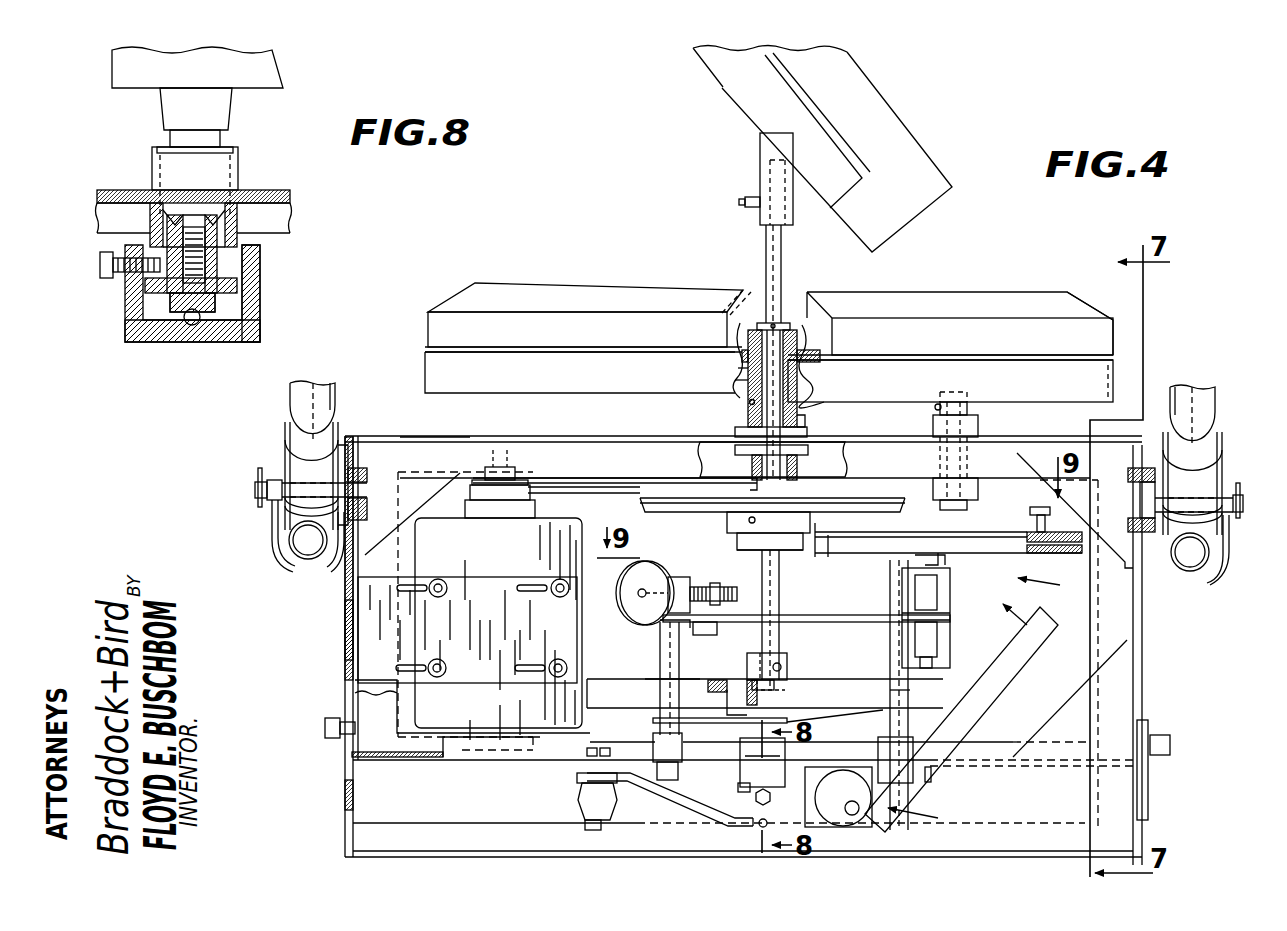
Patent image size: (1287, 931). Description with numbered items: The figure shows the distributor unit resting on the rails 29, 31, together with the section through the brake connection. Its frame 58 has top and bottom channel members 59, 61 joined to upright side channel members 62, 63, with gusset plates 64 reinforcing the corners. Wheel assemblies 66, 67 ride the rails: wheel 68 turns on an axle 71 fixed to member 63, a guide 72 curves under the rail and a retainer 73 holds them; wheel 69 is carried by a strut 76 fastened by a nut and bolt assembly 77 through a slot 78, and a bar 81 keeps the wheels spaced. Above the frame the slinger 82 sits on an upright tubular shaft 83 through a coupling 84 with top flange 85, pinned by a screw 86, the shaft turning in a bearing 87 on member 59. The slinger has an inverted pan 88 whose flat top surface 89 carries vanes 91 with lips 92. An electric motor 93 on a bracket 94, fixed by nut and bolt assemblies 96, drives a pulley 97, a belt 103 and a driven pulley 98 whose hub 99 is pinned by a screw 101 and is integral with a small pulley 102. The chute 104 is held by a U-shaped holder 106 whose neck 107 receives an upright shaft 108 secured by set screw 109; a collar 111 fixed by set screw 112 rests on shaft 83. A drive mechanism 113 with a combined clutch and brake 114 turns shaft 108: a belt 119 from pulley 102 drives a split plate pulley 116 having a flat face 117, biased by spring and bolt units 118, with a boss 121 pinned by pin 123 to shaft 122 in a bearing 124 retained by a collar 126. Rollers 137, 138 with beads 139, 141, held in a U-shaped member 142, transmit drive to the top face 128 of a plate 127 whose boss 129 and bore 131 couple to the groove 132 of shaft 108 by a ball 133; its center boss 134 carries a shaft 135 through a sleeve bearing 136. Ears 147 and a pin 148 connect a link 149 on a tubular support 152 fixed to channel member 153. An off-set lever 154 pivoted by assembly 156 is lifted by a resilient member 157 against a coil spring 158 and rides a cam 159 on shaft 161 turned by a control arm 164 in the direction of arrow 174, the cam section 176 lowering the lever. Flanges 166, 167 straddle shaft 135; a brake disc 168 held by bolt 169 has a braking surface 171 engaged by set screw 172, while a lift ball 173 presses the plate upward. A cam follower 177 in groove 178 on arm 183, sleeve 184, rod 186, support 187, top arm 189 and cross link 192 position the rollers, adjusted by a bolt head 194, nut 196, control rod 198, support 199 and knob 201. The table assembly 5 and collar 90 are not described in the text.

In FIG. 4, the table assembly 5 is at (641, 415).
In FIG. 4, the rail 29 is at (1200, 572).
In FIG. 4, the rail 31 is at (292, 552).
In FIG. 4, the frame 58 is at (413, 764).
In FIG. 4, the top channel member 59 is at (537, 450).
In FIG. 8, the bottom channel member 61 is at (290, 195).
In FIG. 4, the bottom channel member 61 is at (1000, 753).
In FIG. 4, the upright side channel member 62 is at (1145, 660).
In FIG. 4, the upright side channel member 63 is at (352, 700).
In FIG. 4, the gusset plates 64 is at (392, 447).
In FIG. 4, the wheel assembly 66 is at (1240, 460).
In FIG. 4, the wheel assembly 67 is at (263, 450).
In FIG. 4, the wheel 68 is at (300, 468).
In FIG. 4, the wheel 69 is at (333, 423).
In FIG. 4, the axle 71 is at (255, 490).
In FIG. 4, the guide 72 is at (270, 523).
In FIG. 4, the retainer 73 is at (258, 475).
In FIG. 4, the strut 76 is at (345, 626).
In FIG. 4, the nut and bolt assembly 77 is at (332, 718).
In FIG. 4, the longitudinal slot 78 is at (352, 756).
In FIG. 4, the bar 81 is at (332, 545).
In FIG. 4, the slinger 82 is at (594, 288).
In FIG. 4, the upright tubular shaft 83 is at (797, 465).
In FIG. 4, the coupling 84 is at (745, 385).
In FIG. 4, the top flange 85 is at (740, 372).
In FIG. 4, the drive pin or screw 86 is at (749, 404).
In FIG. 4, the bearing 87 is at (740, 453).
In FIG. 4, the inverted circular pan 88 is at (573, 380).
In FIG. 4, the flat top surface 89 is at (1005, 358).
In FIG. 4, the collar 90 is at (798, 420).
In FIG. 4, the upright vanes 91 is at (1100, 340).
In FIG. 4, the lip 92 is at (1035, 290).
In FIG. 4, the electric motor 93 is at (487, 553).
In FIG. 4, the bracket 94 is at (478, 658).
In FIG. 4, the nut and bolt assemblies 96 is at (437, 658).
In FIG. 4, the drive pulley 97 is at (470, 498).
In FIG. 4, the driven pulley 98 is at (700, 510).
In FIG. 4, the hub 99 is at (730, 518).
In FIG. 4, the pin or screw 101 is at (740, 538).
In FIG. 4, the small pulley 102 is at (790, 553).
In FIG. 4, the flexible belt 103 is at (588, 488).
In FIG. 4, the chute 104 is at (717, 62).
In FIG. 4, the U-shaped holder 106 is at (730, 100).
In FIG. 4, the tubular neck 107 is at (757, 145).
In FIG. 4, the upright shaft 108 is at (763, 236).
In FIG. 4, the set screw 109 is at (740, 202).
In FIG. 4, the collar 111 is at (792, 323).
In FIG. 4, the set screw 112 is at (770, 322).
In FIG. 4, the drive mechanism 113 is at (1055, 585).
In FIG. 4, the combined clutch and brake 114 is at (929, 818).
In FIG. 4, the split plate pulley 116 is at (1010, 553).
In FIG. 4, the bottom face 117 is at (853, 555).
In FIG. 4, the spring and bolt units 118 is at (1035, 509).
In FIG. 4, the belt 119 is at (828, 552).
In FIG. 4, the upright boss 121 is at (982, 492).
In FIG. 4, the upright shaft 122 is at (967, 390).
In FIG. 4, the transverse pin 123 is at (980, 503).
In FIG. 4, the bearing 124 is at (980, 425).
In FIG. 4, the collar 126 is at (935, 409).
In FIG. 8, the horizontal plate 127 is at (132, 77).
In FIG. 4, the horizontal plate 127 is at (613, 697).
In FIG. 4, the flat top face 128 is at (632, 679).
In FIG. 4, the boss 129 is at (750, 655).
In FIG. 4, the axial bore 131 is at (790, 678).
In FIG. 4, the axial groove 132 is at (786, 652).
In FIG. 4, the ball 133 is at (790, 660).
In FIG. 8, the center boss 134 is at (223, 108).
In FIG. 4, the center boss 134 is at (785, 705).
In FIG. 8, the shaft 135 is at (217, 137).
In FIG. 4, the shaft 135 is at (740, 743).
In FIG. 8, the sleeve bearing 136 is at (235, 167).
In FIG. 4, the sleeve bearing 136 is at (790, 752).
In FIG. 4, the roller 137 is at (942, 565).
In FIG. 4, the roller 138 is at (897, 677).
In FIG. 4, the peripheral bead 139 is at (918, 560).
In FIG. 4, the peripheral bead 141 is at (950, 678).
In FIG. 4, the U-shaped member 142 is at (945, 590).
In FIG. 4, the ears 147 is at (940, 640).
In FIG. 4, the upright pin 148 is at (905, 575).
In FIG. 4, the link 149 is at (947, 618).
In FIG. 4, the tubular support 152 is at (898, 785).
In FIG. 4, the inverted channel support member 153 is at (932, 778).
In FIG. 8, the off-set lever 154 is at (217, 332).
In FIG. 4, the off-set lever 154 is at (653, 790).
In FIG. 4, the nut and bolt assembly 156 is at (595, 833).
In FIG. 4, the resilient compressible member 157 is at (583, 808).
In FIG. 4, the coil spring 158 is at (585, 768).
In FIG. 4, the cam 159 is at (843, 830).
In FIG. 4, the transverse shaft 161 is at (860, 810).
In FIG. 4, the control arm 164 is at (1027, 653).
In FIG. 8, the upright flange 166 is at (132, 293).
In FIG. 8, the upright flange 167 is at (253, 305).
In FIG. 8, the brake disc 168 is at (237, 285).
In FIG. 4, the brake disc 168 is at (755, 802).
In FIG. 8, the bolt 169 is at (167, 305).
In FIG. 8, the braking surface 171 is at (228, 278).
In FIG. 8, the set screw 172 is at (110, 257).
In FIG. 4, the set screw 172 is at (740, 787).
In FIG. 8, the lift ball 173 is at (187, 323).
In FIG. 4, the lift ball 173 is at (760, 827).
In FIG. 4, the arrow 174 is at (1023, 608).
In FIG. 4, the peripheral section 176 is at (817, 830).
In FIG. 4, the cam follower 177 is at (708, 690).
In FIG. 4, the groove 178 is at (743, 685).
In FIG. 4, the horizontal arm 183 is at (692, 723).
In FIG. 4, the upright sleeve 184 is at (695, 664).
In FIG. 4, the upright rod 186 is at (659, 800).
In FIG. 4, the support 187 is at (652, 738).
In FIG. 4, the top arm 189 is at (720, 627).
In FIG. 4, the cross link 192 is at (817, 615).
In FIG. 4, the enlarged head 194 is at (700, 584).
In FIG. 4, the nut 196 is at (690, 637).
In FIG. 4, the control rod 198 is at (714, 592).
In FIG. 4, the support 199 is at (680, 575).
In FIG. 4, the knob 201 is at (623, 578).